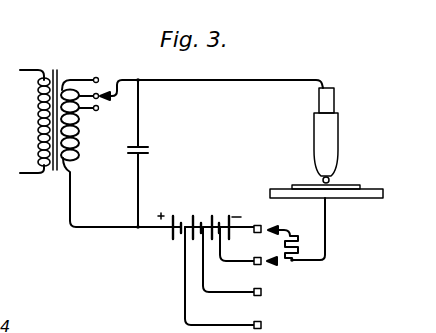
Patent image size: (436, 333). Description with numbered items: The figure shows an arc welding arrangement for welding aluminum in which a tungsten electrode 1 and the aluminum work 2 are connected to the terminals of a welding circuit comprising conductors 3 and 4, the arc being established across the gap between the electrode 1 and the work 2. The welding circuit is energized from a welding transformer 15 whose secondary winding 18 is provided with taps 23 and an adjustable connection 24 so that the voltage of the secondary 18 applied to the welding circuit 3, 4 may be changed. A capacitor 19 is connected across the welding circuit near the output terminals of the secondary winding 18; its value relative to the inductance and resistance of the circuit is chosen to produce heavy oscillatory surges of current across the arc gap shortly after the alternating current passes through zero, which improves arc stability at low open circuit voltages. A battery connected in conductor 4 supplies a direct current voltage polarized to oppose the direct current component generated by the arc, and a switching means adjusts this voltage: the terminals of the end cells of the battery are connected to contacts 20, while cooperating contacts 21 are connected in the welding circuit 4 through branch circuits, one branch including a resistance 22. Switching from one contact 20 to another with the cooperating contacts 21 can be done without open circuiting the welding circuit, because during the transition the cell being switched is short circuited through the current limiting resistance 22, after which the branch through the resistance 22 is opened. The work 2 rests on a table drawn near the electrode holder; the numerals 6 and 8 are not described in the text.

The tungsten electrode 1 is at (331, 179).
The aluminum work 2 is at (350, 187).
The conductor 3 is at (242, 82).
The conductor 4 is at (158, 231).
The work table 6 is at (367, 198).
The tool holder 8 is at (356, 130).
The welding transformer 15 is at (63, 63).
The secondary winding 18 is at (80, 131).
The capacitor 19 is at (148, 150).
The contacts 20 is at (258, 224).
The cooperating contacts 21 is at (260, 257).
The resistance 22 is at (296, 239).
The taps 23 is at (96, 77).
The adjustable connection 24 is at (106, 91).